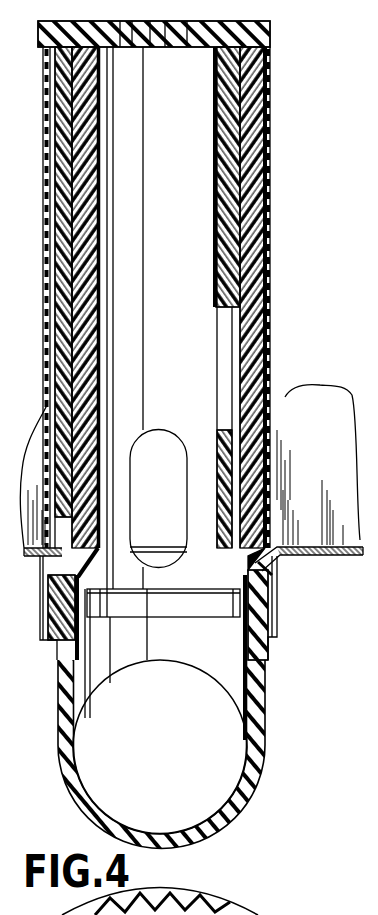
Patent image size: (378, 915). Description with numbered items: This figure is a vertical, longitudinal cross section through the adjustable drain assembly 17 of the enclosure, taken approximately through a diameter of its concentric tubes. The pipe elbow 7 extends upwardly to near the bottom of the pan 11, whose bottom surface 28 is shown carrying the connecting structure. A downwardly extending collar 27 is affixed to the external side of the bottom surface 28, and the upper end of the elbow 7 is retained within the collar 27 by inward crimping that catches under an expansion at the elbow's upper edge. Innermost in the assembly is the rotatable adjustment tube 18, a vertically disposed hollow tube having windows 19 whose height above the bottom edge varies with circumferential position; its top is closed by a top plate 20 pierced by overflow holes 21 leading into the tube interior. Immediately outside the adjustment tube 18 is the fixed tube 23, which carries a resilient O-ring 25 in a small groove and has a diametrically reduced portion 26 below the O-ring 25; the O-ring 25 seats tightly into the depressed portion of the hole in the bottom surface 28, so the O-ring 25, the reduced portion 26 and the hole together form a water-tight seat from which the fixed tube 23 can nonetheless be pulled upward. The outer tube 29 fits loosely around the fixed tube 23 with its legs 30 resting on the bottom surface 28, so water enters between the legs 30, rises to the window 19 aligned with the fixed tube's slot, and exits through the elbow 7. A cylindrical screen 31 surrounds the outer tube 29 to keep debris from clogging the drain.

The pipe elbow 7 is at (262, 740).
The pan 11 is at (316, 428).
The drain assembly 17 is at (281, 181).
The adjustment tube 18 is at (215, 270).
The window 19 is at (215, 320).
The top plate 20 is at (120, 22).
The overflow hole 21 is at (181, 22).
The fixed tube 23 is at (258, 213).
The O-ring 25 is at (268, 570).
The reduced portion 26 is at (240, 594).
The collar 27 is at (278, 638).
The bottom surface 28 is at (342, 550).
The outer tube 29 is at (258, 313).
The leg 30 is at (258, 522).
The screen 31 is at (268, 250).